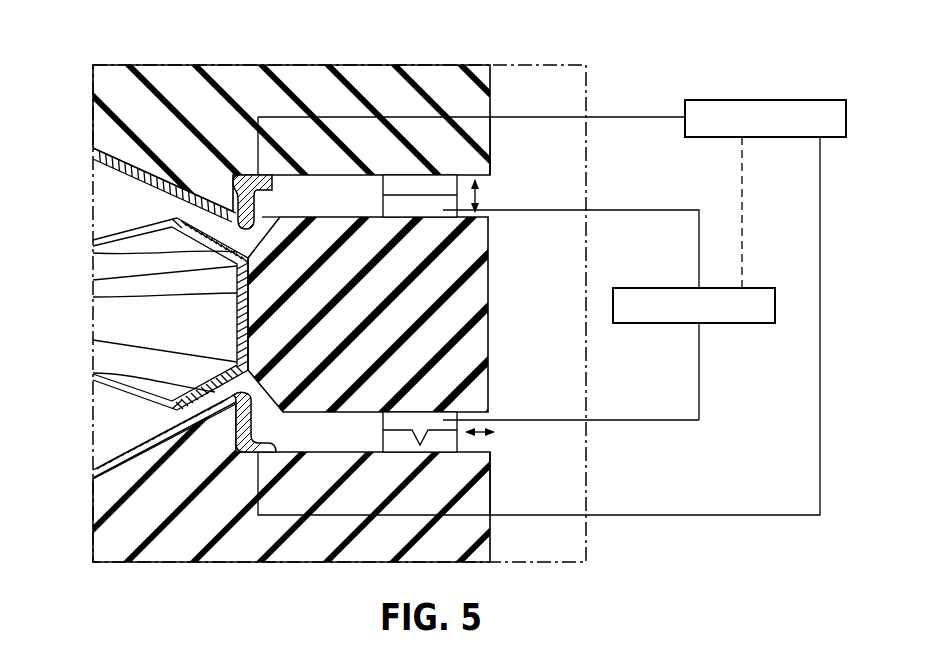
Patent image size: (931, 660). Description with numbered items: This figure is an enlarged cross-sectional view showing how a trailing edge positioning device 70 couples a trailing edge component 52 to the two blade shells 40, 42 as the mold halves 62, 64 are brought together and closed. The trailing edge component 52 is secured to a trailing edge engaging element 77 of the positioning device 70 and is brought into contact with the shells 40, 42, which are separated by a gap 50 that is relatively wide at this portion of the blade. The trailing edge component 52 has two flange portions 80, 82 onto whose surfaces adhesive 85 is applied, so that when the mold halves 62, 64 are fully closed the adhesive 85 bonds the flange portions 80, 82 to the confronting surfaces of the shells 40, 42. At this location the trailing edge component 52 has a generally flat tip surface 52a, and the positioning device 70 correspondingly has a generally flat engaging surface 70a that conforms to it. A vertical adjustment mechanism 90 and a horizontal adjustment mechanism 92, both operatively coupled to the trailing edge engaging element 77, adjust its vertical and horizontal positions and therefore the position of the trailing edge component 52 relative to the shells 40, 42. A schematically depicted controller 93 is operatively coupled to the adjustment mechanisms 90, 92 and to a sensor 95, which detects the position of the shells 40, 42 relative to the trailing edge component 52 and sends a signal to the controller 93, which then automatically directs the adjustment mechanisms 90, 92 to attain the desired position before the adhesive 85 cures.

The trailing edge positioning device 70 is at (90, 56).
The shell 40 is at (108, 150).
The shell 42 is at (112, 462).
The gap 50 is at (252, 231).
The trailing edge component 52 is at (106, 234).
The generally flat tip surface 52a is at (246, 312).
The mold half 62 is at (490, 136).
The mold half 64 is at (483, 490).
The generally flat engaging surface 70a is at (93, 297).
The trailing edge engaging element 77 is at (488, 348).
The flange portion 80 is at (93, 253).
The flange portion 82 is at (93, 373).
The adhesive 85 is at (174, 223).
The vertical adjustment mechanism 90 is at (383, 203).
The horizontal adjustment mechanism 92 is at (383, 438).
The controller 93 is at (640, 288).
The sensor 95 is at (788, 100).